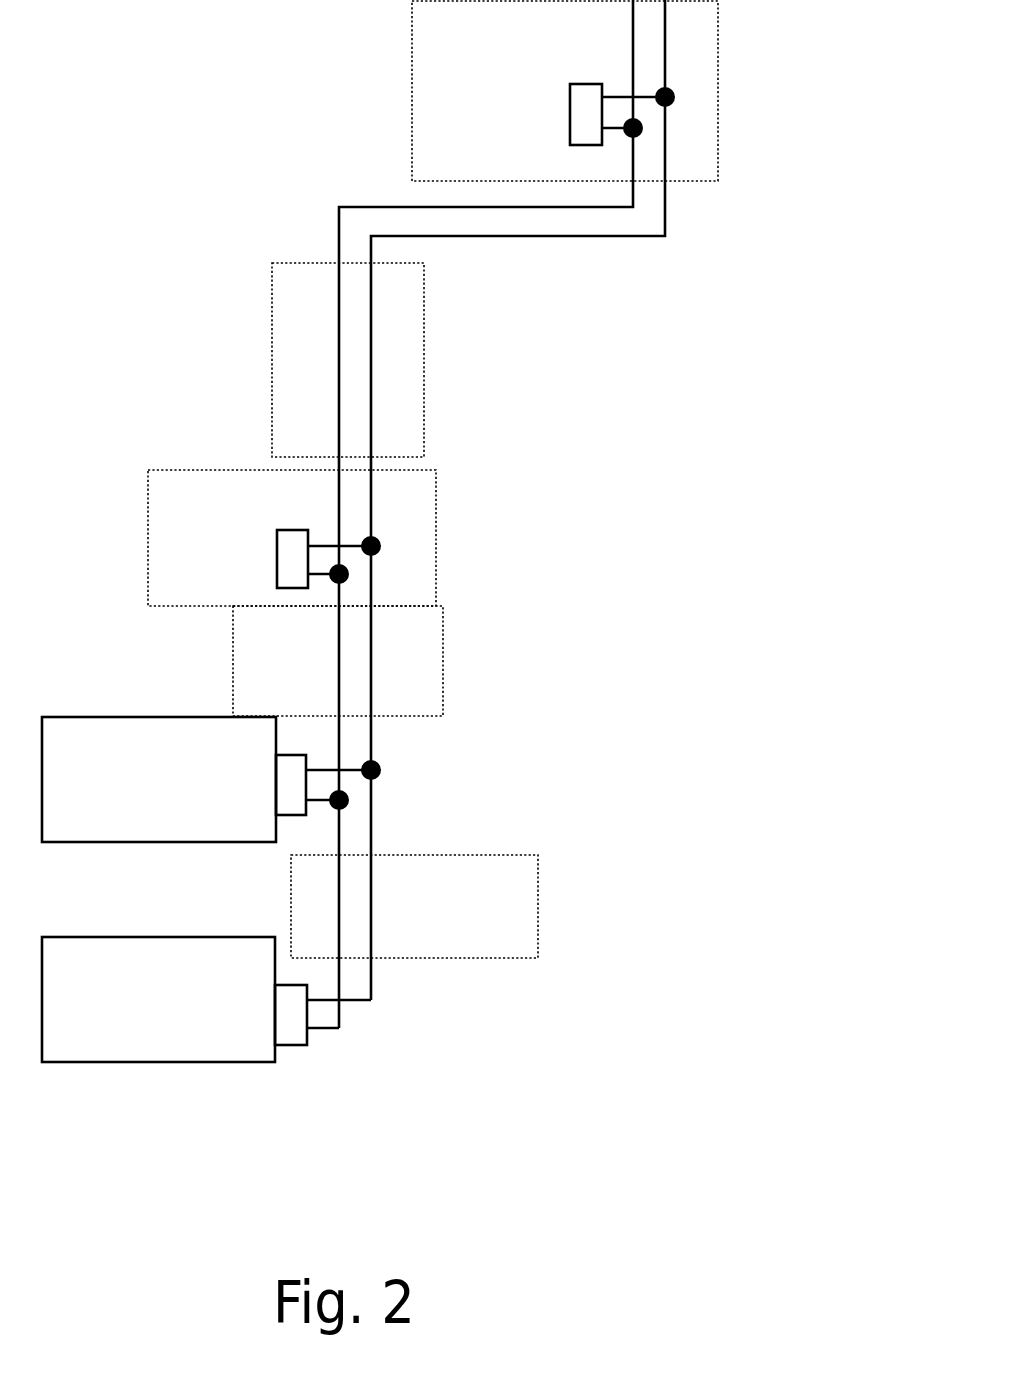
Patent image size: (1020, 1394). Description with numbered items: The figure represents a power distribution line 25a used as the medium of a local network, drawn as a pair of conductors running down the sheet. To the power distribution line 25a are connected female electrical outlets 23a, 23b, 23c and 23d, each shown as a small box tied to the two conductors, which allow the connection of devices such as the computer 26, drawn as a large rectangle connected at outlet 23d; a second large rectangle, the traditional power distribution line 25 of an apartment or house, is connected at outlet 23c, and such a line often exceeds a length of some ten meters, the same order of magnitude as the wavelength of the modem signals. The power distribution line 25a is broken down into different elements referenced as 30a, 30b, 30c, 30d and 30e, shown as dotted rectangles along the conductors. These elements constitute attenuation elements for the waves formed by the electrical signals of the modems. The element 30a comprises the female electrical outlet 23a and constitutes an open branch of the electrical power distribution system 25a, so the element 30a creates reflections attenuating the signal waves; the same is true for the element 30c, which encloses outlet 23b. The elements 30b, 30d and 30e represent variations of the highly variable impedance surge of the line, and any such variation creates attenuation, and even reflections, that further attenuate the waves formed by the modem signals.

The female electrical outlet 23a is at (588, 100).
The female electrical outlet 23b is at (293, 575).
The female electrical outlet 23c is at (306, 815).
The female electrical outlet 23d is at (293, 1030).
The power distribution line 25 is at (75, 728).
The power distribution line 25a is at (346, 231).
The computer 26 is at (113, 1045).
The element 30a is at (440, 112).
The element 30b is at (288, 369).
The element 30c is at (437, 538).
The element 30d is at (437, 689).
The element 30e is at (497, 931).